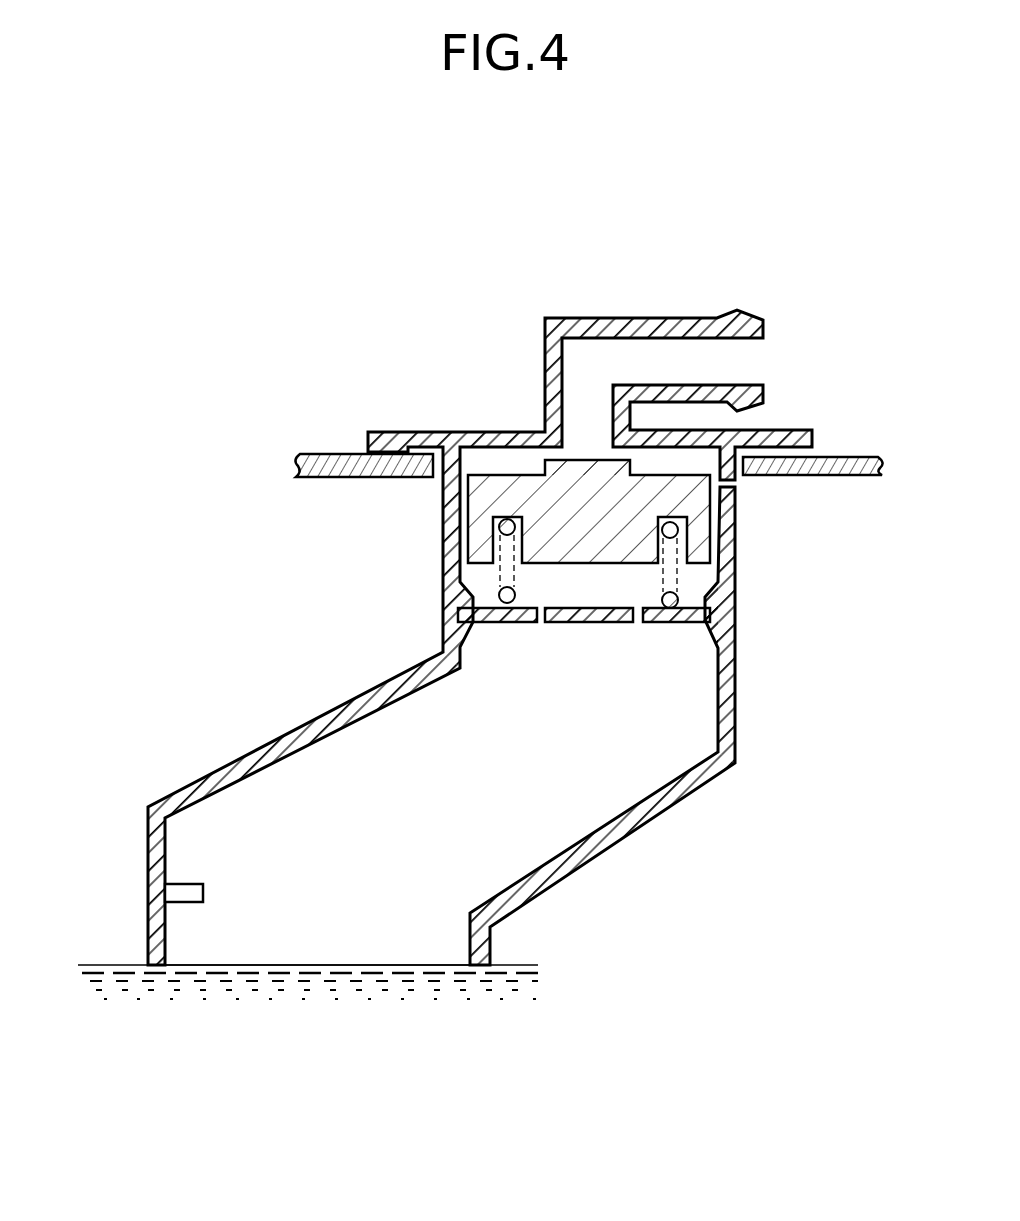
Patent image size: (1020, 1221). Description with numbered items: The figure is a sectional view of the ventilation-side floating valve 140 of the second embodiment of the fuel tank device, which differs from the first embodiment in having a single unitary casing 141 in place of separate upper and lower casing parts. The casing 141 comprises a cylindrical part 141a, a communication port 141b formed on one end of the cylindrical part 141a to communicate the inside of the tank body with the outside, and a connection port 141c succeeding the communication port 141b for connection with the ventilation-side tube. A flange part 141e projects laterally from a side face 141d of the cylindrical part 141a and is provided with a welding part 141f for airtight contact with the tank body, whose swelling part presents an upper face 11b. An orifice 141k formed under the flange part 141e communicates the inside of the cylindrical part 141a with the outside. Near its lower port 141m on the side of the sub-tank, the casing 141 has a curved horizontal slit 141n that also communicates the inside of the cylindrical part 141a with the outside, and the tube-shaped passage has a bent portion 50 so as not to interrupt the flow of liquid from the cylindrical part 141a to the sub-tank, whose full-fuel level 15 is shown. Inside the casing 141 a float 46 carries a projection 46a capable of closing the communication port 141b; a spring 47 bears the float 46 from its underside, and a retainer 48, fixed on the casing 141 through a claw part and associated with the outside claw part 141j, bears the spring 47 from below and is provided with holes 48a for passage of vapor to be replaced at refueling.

The ventilation-side floating valve 140 is at (252, 575).
The casing 141 is at (681, 310).
The cylindrical part 141a is at (443, 546).
The communication port 141b is at (585, 445).
The connection port 141c is at (765, 331).
The side face 141d is at (736, 540).
The flange part 141e is at (400, 430).
The welding part 141f is at (365, 453).
The claw part 141j is at (698, 630).
The orifice 141k is at (740, 490).
The lower port 141m is at (355, 966).
The curved horizontal slit 141n is at (152, 893).
The upper face of the swelling part 11b is at (850, 457).
The float 46 is at (447, 496).
The projection 46a is at (518, 432).
The spring 47 is at (500, 596).
The retainer 48 is at (662, 624).
The holes 48a is at (636, 624).
The bent portion 50 is at (310, 720).
The full-fuel level 15 is at (84, 965).